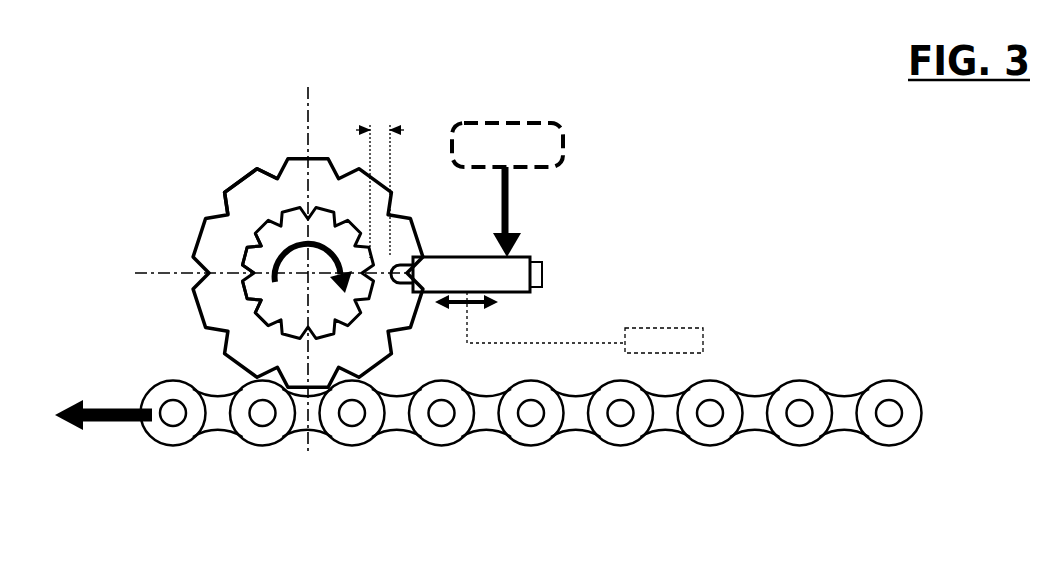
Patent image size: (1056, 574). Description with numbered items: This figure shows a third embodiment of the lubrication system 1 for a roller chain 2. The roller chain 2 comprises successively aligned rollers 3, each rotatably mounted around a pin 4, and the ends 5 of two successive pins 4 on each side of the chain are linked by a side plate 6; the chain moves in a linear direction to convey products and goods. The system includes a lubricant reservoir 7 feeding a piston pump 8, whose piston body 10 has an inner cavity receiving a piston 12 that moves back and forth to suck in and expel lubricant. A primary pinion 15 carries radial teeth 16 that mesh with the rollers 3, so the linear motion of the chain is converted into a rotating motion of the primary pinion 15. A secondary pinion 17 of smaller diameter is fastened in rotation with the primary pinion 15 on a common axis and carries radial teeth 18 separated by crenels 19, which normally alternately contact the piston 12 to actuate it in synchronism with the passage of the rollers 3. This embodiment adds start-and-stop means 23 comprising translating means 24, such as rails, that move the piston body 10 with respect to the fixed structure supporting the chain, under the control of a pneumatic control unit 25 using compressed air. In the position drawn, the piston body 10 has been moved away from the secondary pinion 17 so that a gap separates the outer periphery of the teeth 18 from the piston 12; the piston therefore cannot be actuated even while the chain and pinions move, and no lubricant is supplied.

The lubrication system 1 is at (266, 130).
The roller chain 2 is at (535, 415).
The roller 3 is at (708, 442).
The pin 4 is at (805, 422).
The end 5 is at (792, 404).
The side plate 6 is at (844, 428).
The lubricant reservoir 7 is at (530, 137).
The piston pump 8 is at (529, 247).
The piston body 10 is at (432, 263).
The piston 12 is at (400, 277).
The primary pinion 15 is at (219, 196).
The radial teeth 16 is at (246, 183).
The secondary pinion 17 is at (235, 291).
The radial teeth 18 is at (257, 309).
The crenels 19 is at (238, 255).
The start-and-stop means 23 is at (658, 298).
The translating means 24 is at (478, 310).
The pneumatic control unit 25 is at (689, 330).